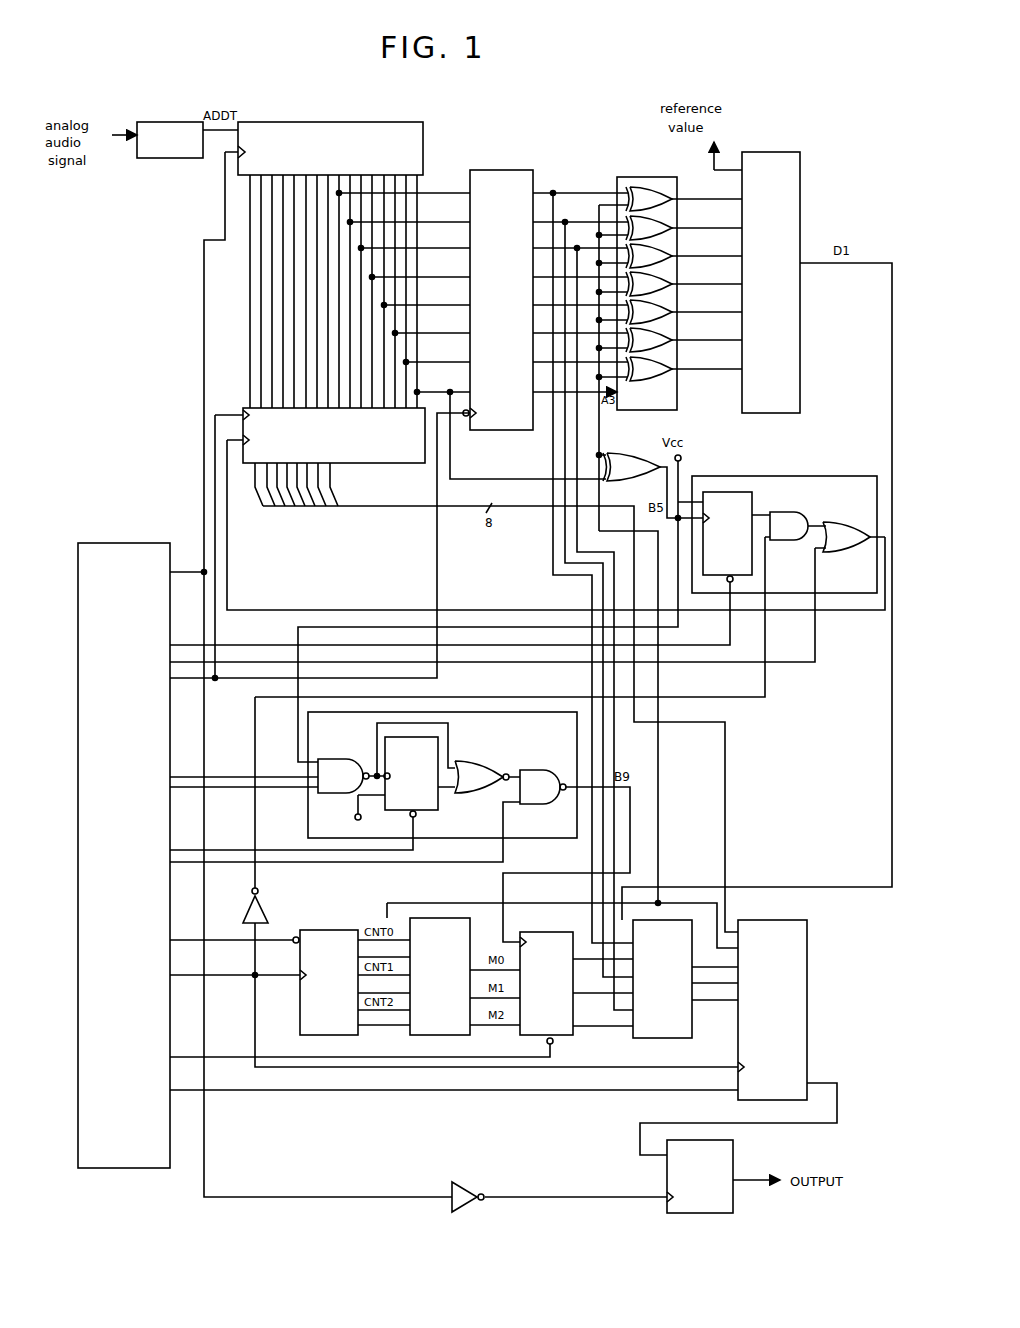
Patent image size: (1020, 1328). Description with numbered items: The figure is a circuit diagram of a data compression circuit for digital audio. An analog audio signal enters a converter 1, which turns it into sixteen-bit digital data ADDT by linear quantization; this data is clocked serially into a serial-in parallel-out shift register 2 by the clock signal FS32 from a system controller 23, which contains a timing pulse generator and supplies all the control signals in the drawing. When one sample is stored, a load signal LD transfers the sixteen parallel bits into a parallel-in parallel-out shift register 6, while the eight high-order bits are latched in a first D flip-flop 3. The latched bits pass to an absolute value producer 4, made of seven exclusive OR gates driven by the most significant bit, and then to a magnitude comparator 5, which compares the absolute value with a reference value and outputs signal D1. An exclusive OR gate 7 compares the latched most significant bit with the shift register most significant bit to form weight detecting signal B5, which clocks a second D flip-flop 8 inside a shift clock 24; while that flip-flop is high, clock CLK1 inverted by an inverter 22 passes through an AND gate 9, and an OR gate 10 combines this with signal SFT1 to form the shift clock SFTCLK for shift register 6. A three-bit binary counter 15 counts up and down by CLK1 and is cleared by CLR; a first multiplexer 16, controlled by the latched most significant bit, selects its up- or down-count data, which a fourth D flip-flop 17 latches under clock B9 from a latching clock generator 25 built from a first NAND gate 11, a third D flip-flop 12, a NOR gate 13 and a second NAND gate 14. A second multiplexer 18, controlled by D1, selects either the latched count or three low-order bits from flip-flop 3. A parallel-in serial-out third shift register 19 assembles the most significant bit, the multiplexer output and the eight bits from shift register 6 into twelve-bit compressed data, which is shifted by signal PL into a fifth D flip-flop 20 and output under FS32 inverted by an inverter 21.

The converter 1 is at (161, 123).
The serial-in parallel-out shift register 2 is at (327, 121).
The first D flip-flop 3 is at (500, 170).
The absolute value producer 4 is at (642, 168).
The magnitude comparator 5 is at (774, 134).
The parallel-in parallel-out shift register 6 is at (239, 401).
The exclusive OR gate 7 is at (636, 451).
The second D flip-flop 8 is at (757, 495).
The AND gate 9 is at (784, 546).
The OR gate 10 is at (848, 547).
The first NAND gate 11 is at (339, 760).
The third D flip-flop 12 is at (438, 814).
The NOR gate 13 is at (486, 762).
The second NAND gate 14 is at (550, 762).
The 3-bit binary counter 15 is at (333, 930).
The first multiplexer 16 is at (418, 1048).
The fourth D flip-flop 17 is at (562, 1042).
The second multiplexer 18 is at (666, 1040).
The parallel-in serial-out third shift register 19 is at (808, 1000).
The fifth D flip-flop 20 is at (736, 1152).
The inverter 21 is at (466, 1178).
The inverter 22 is at (266, 907).
The system controller 23 is at (138, 541).
The shift clock 24 is at (838, 467).
The latching clock generator 25 is at (304, 820).